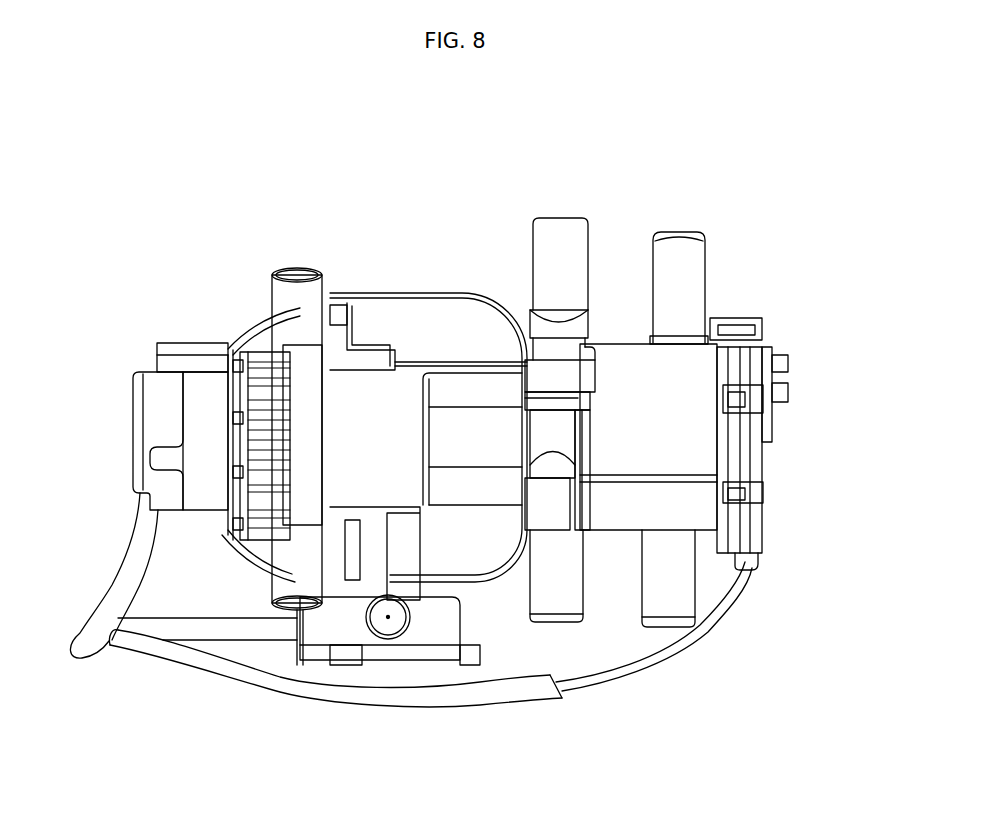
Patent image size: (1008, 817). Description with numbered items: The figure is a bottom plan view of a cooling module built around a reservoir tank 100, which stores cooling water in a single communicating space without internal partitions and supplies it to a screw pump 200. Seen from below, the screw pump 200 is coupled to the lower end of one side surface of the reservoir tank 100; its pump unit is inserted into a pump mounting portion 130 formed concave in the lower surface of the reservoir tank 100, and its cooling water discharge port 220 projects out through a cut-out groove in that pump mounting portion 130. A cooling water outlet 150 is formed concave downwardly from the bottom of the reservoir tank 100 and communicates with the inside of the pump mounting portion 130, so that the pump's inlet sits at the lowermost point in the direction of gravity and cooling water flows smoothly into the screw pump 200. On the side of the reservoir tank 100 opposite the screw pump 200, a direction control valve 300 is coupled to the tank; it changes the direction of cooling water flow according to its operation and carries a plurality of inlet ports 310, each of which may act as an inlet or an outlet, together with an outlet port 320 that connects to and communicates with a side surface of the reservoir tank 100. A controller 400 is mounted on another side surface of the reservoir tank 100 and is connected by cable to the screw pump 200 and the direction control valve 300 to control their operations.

The reservoir tank 100 is at (433, 293).
The pump mounting portion 130 is at (358, 403).
The cooling water outlet 150 is at (468, 420).
The screw pump 200 is at (190, 343).
The cooling water discharge port 220 is at (297, 268).
The direction control valve 300 is at (688, 382).
The inlet port 310 is at (561, 217).
The outlet port 320 is at (630, 508).
The controller 400 is at (400, 650).